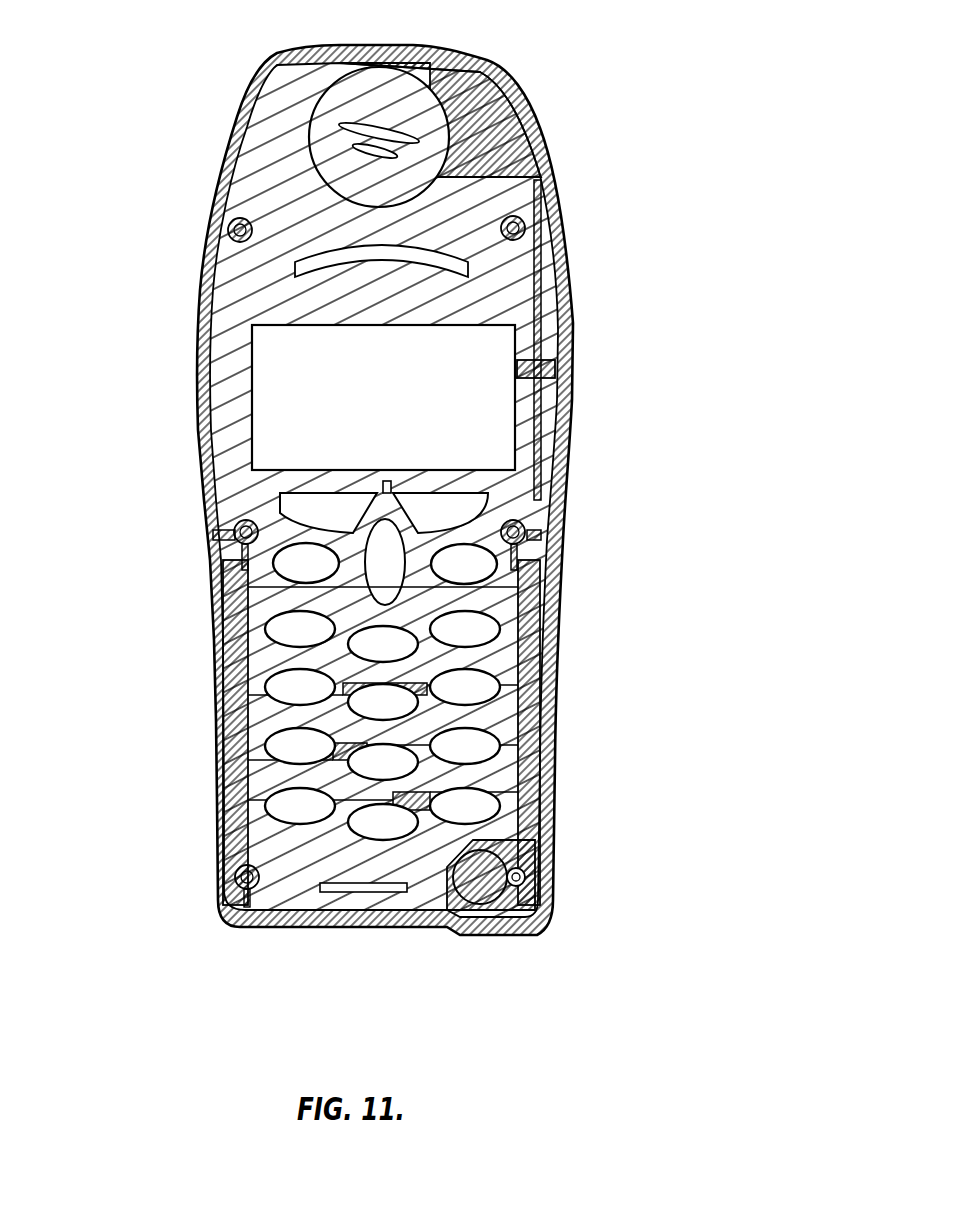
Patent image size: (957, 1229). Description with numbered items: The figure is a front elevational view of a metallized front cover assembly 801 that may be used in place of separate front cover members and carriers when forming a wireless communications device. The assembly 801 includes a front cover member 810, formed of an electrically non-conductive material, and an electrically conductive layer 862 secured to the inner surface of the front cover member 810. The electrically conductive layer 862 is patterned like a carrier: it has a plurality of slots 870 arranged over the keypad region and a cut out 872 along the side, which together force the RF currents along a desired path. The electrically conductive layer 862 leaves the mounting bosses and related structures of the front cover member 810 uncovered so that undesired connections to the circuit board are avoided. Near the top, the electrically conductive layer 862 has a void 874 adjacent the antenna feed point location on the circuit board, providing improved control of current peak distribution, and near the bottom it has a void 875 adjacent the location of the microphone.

The front cover assembly 801 is at (677, 343).
The front cover member 810 is at (552, 688).
The electrically conductive layer 862 is at (242, 840).
The slots 870 is at (420, 662).
The cut out 872 is at (540, 352).
The void 874 is at (483, 64).
The void 875 is at (482, 893).